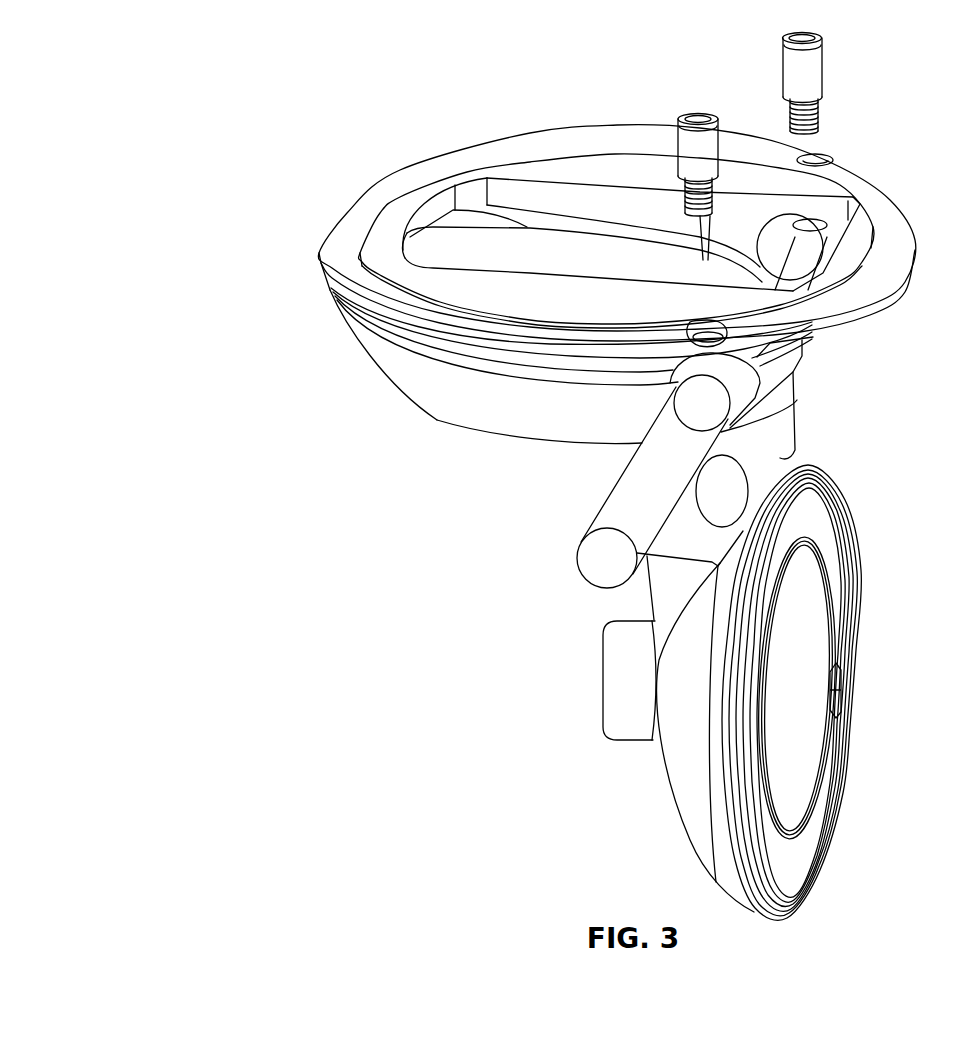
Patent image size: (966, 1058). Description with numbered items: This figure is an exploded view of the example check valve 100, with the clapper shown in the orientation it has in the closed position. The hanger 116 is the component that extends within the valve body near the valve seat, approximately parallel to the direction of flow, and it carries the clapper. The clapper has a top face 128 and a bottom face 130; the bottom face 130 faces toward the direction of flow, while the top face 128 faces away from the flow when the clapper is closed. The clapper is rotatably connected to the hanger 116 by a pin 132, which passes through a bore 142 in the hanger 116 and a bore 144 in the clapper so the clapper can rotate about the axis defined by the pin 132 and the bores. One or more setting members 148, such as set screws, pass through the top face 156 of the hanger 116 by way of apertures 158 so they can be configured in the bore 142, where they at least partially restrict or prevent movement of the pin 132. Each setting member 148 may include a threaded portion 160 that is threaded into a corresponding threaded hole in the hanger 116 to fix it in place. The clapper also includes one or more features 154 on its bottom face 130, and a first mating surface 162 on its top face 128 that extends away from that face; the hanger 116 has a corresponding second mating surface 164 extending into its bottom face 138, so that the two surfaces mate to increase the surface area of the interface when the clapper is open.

The check valve 100 is at (148, 58).
The hanger 116 is at (370, 350).
The top face 128 is at (710, 827).
The bottom face 130 is at (827, 543).
The pin 132 is at (603, 515).
The bottom face 138 is at (465, 430).
The bore 142 is at (780, 262).
The bore 144 is at (727, 512).
The setting member 148 is at (698, 112).
The feature 154 is at (833, 640).
The top face 156 is at (892, 207).
The aperture 158 is at (833, 163).
The threaded portion 160 is at (690, 210).
The first mating surface 162 is at (677, 760).
The second mating surface 164 is at (547, 223).